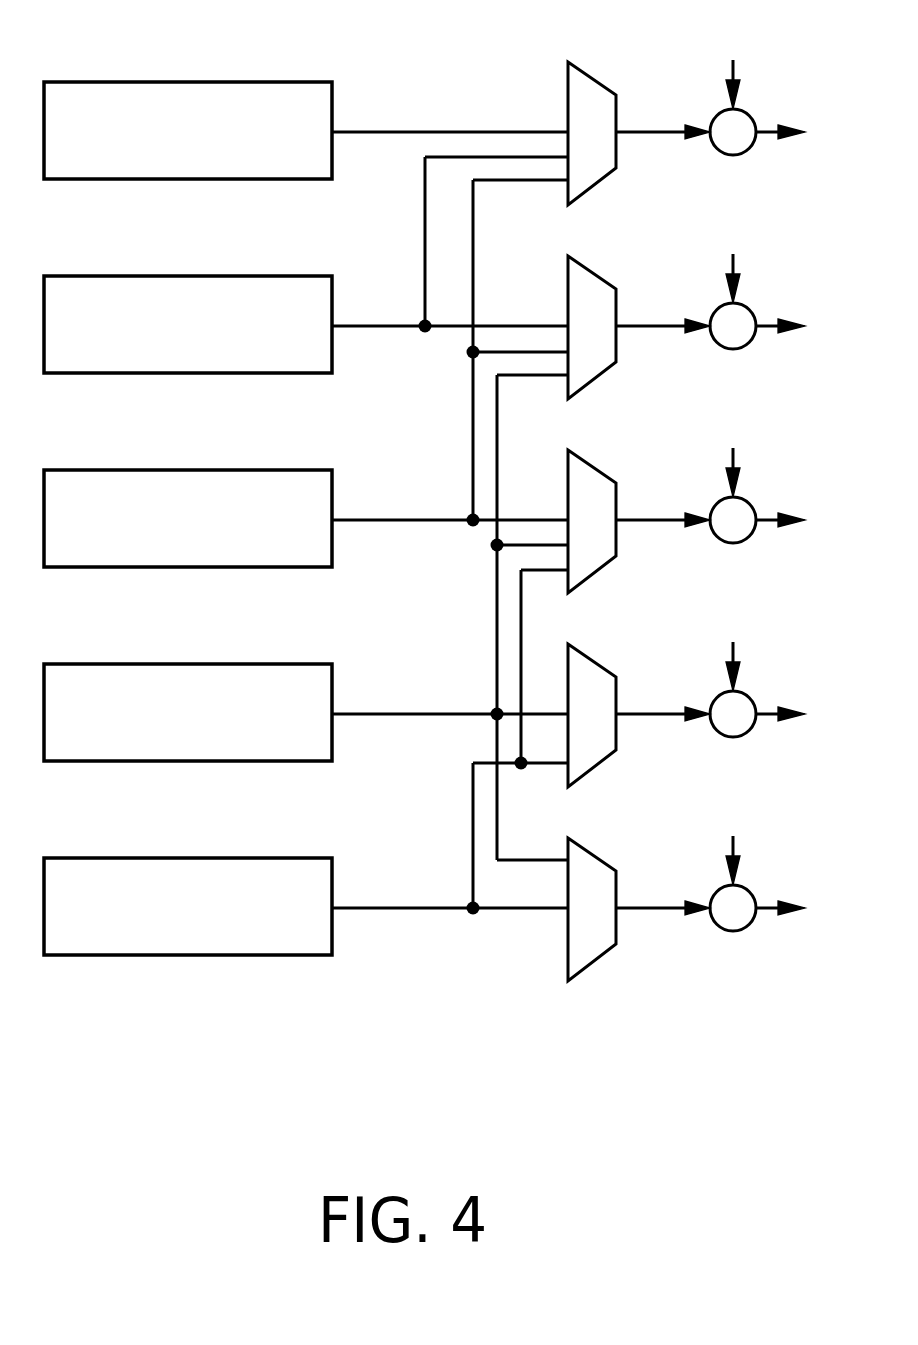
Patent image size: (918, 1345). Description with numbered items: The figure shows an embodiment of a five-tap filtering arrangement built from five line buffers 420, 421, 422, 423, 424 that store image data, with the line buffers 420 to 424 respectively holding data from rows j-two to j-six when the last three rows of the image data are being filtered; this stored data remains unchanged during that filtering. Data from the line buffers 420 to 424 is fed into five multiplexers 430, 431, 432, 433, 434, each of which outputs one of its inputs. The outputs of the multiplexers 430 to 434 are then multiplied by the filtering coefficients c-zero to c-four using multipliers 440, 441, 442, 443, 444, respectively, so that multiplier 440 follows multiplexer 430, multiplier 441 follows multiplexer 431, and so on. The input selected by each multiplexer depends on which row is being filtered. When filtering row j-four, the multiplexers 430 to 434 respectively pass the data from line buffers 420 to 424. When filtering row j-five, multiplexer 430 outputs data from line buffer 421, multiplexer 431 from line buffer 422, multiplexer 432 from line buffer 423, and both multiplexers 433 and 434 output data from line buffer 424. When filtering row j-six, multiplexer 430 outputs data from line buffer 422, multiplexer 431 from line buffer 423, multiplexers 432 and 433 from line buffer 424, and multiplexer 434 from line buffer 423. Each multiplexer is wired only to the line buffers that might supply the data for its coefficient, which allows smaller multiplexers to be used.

The line buffer 420 is at (90, 82).
The line buffer 421 is at (90, 276).
The line buffer 422 is at (90, 470).
The line buffer 423 is at (90, 664).
The line buffer 424 is at (90, 858).
The multiplexer 430 is at (592, 74).
The multiplexer 431 is at (597, 268).
The multiplexer 432 is at (592, 462).
The multiplexer 433 is at (603, 662).
The multiplexer 434 is at (585, 843).
The multiplier 440 is at (730, 156).
The multiplier 441 is at (730, 350).
The multiplier 442 is at (730, 544).
The multiplier 443 is at (730, 738).
The multiplier 444 is at (730, 932).